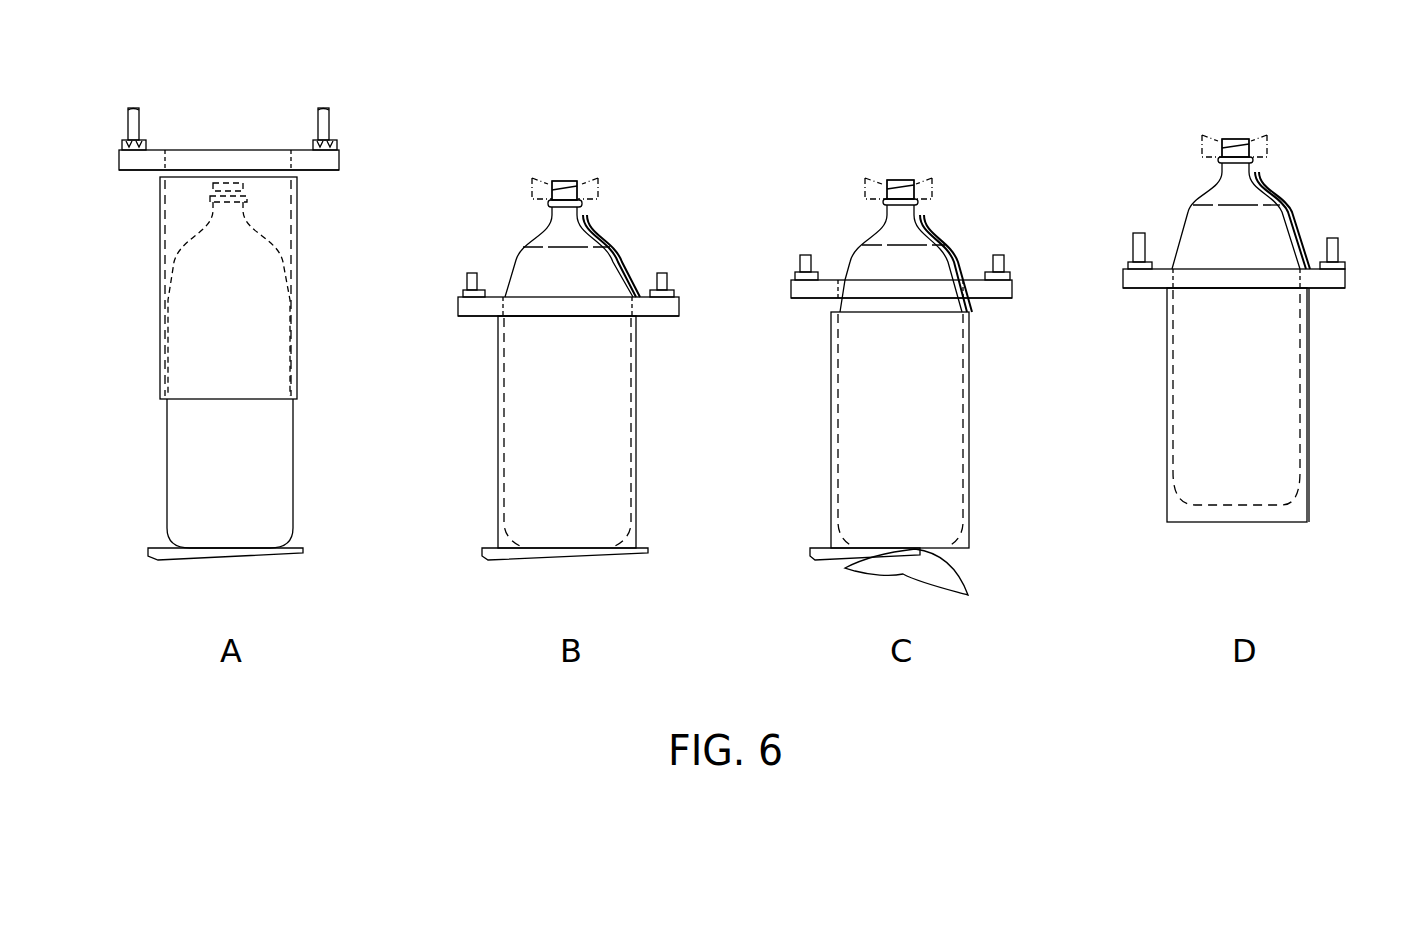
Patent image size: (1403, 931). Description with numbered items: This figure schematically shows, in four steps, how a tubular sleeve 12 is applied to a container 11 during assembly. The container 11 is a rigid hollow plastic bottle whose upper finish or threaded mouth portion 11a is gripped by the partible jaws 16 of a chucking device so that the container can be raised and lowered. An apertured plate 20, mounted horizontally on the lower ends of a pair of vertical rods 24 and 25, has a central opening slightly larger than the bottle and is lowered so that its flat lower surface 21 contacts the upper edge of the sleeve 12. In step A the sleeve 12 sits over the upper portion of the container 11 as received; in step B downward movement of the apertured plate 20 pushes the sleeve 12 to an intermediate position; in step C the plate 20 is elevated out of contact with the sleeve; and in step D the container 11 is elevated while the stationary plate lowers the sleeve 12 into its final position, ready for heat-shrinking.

The container 11 is at (293, 480).
The finish 11a is at (568, 182).
The tubular sleeve 12 is at (297, 348).
The partible jaws 16 is at (598, 183).
The apertured plate 20 is at (330, 158).
The flat lower surface 21 is at (313, 170).
The vertical rod 24 is at (140, 121).
The vertical rod 25 is at (317, 132).